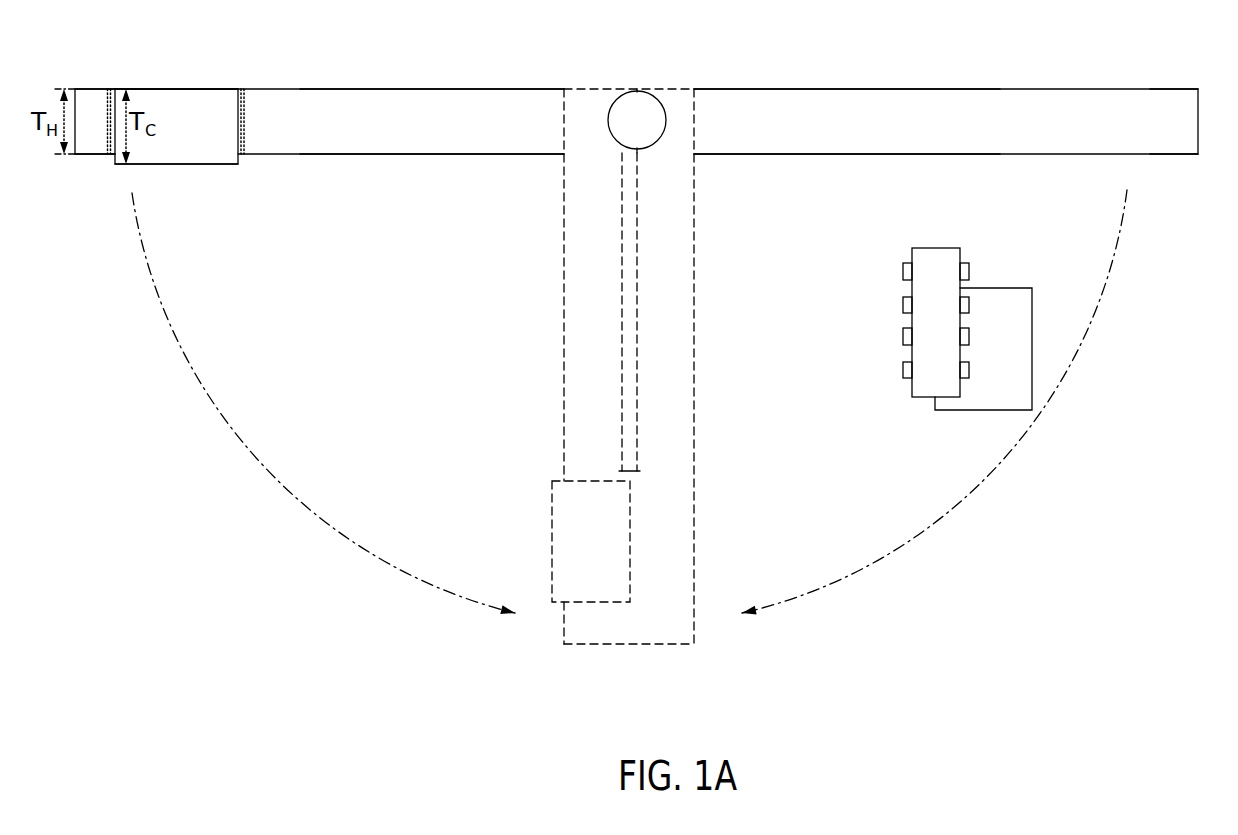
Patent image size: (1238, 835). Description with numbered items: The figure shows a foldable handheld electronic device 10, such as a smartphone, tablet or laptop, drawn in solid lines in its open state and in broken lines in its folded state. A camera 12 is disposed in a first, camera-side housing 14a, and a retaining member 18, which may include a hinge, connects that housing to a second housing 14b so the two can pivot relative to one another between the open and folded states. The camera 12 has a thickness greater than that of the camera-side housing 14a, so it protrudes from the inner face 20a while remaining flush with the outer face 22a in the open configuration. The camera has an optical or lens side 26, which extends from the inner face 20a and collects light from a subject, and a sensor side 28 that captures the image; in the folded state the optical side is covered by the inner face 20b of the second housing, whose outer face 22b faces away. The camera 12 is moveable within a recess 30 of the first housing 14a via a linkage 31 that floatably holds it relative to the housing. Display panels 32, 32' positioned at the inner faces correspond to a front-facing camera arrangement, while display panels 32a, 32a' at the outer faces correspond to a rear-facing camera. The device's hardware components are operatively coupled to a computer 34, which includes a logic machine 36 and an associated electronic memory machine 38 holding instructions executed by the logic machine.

The handheld electronic device 10 is at (170, 582).
The camera 12 is at (198, 139).
The first, camera-side housing 14a is at (420, 132).
The second housing 14b is at (897, 325).
The retaining member 18 is at (612, 107).
The inner face 20a is at (93, 155).
The inner face 20b is at (1187, 155).
The outer face 22a is at (92, 89).
The outer face 22b is at (1185, 89).
The optical or lens side 26 is at (212, 165).
The sensor side 28 is at (193, 89).
The recess 30 is at (243, 90).
The linkage 31 is at (111, 118).
The display panel 32 is at (432, 187).
The display panel 32a is at (432, 56).
The display panel 32' is at (847, 187).
The display panel 32a' is at (847, 52).
The computer 34 is at (974, 310).
The logic machine 36 is at (993, 362).
The electronic memory machine 38 is at (946, 334).